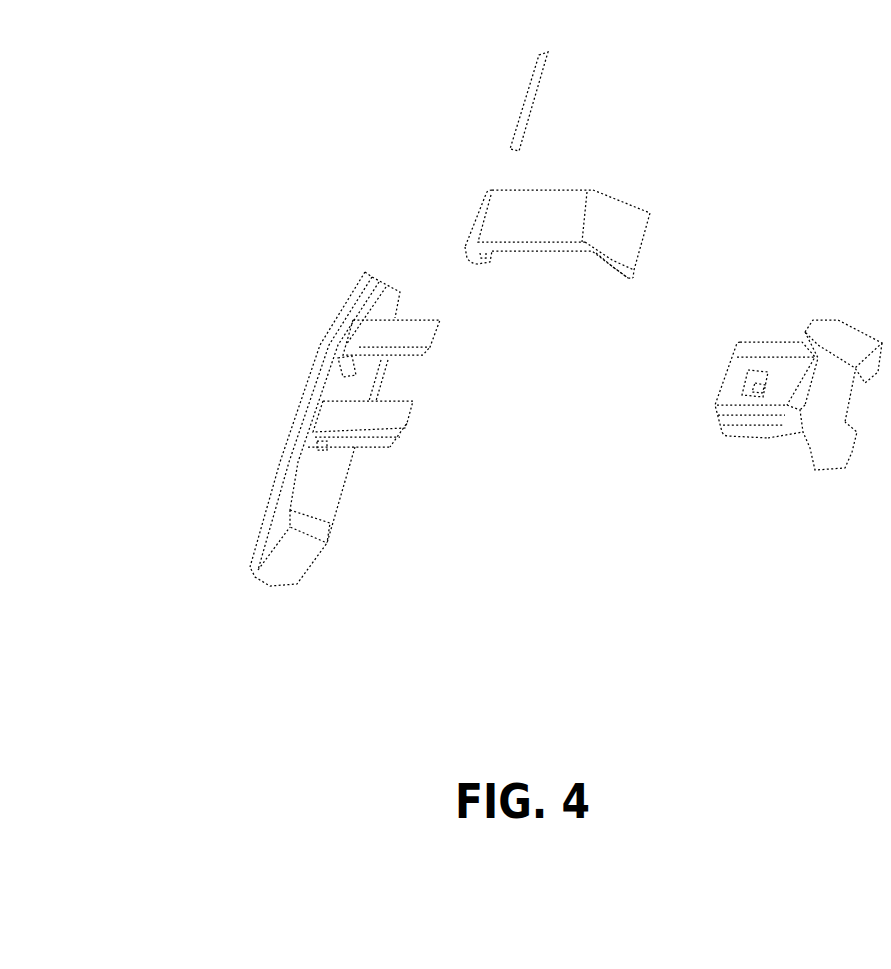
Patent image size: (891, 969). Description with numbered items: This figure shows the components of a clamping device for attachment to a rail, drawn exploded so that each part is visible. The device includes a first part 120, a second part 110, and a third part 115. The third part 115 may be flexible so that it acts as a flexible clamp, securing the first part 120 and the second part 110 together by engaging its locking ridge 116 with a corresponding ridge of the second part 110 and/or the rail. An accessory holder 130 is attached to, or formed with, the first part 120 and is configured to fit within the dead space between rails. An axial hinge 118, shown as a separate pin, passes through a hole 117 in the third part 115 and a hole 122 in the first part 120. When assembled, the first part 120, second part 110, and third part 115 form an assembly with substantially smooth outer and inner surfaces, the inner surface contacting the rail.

The second part 110 is at (842, 445).
The third part 115 is at (615, 208).
The locking ridge 116 is at (608, 270).
The hole 117 is at (479, 258).
The axial hinge 118 is at (530, 90).
The first part 120 is at (367, 438).
The hole 122 is at (340, 362).
The accessory holder 130 is at (260, 548).